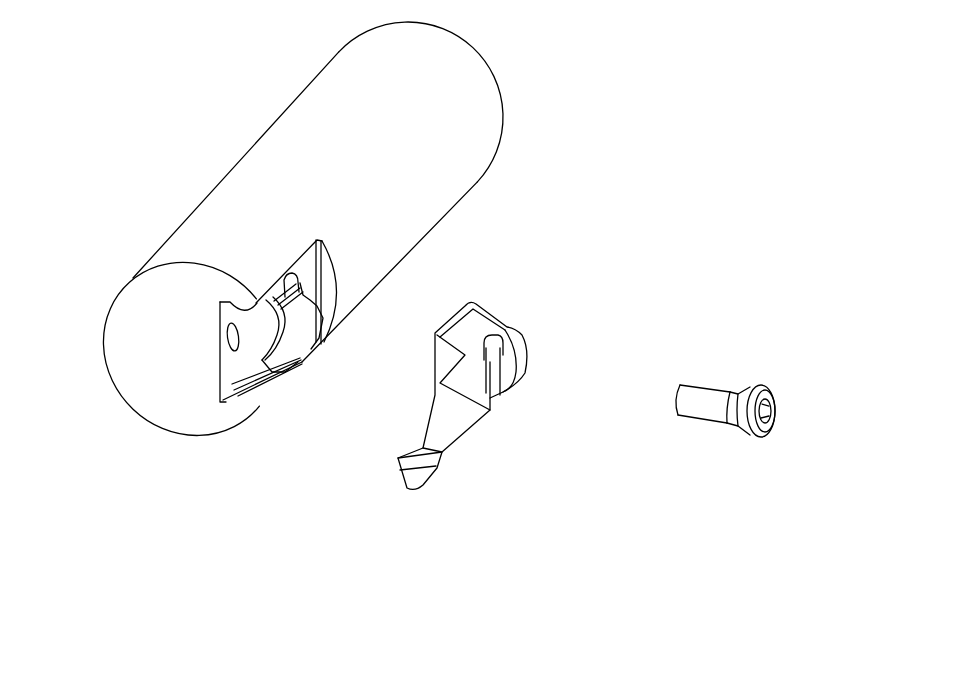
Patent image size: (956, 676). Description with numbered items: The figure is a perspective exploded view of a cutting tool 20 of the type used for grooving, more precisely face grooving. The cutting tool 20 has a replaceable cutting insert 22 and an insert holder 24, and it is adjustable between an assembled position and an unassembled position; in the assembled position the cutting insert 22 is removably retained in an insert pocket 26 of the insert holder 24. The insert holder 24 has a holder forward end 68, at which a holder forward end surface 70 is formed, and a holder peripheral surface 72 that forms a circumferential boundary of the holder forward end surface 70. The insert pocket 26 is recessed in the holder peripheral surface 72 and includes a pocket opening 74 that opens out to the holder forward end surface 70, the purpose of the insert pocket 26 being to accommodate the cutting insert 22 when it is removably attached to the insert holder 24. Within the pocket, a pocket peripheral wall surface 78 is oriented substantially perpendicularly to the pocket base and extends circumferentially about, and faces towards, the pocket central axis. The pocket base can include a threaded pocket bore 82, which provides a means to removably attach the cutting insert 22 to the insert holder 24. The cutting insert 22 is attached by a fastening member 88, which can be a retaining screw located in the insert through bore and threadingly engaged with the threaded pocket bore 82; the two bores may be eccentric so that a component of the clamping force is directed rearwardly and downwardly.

The cutting tool 20 is at (685, 72).
The cutting insert 22 is at (522, 328).
The insert holder 24 is at (238, 128).
The insert pocket 26 is at (255, 324).
The holder forward end 68 is at (132, 262).
The holder forward end surface 70 is at (128, 330).
The holder peripheral surface 72 is at (223, 212).
The pocket opening 74 is at (224, 389).
The pocket peripheral wall surface 78 is at (298, 340).
The threaded pocket bore 82 is at (273, 388).
The fastening member 88 is at (732, 380).